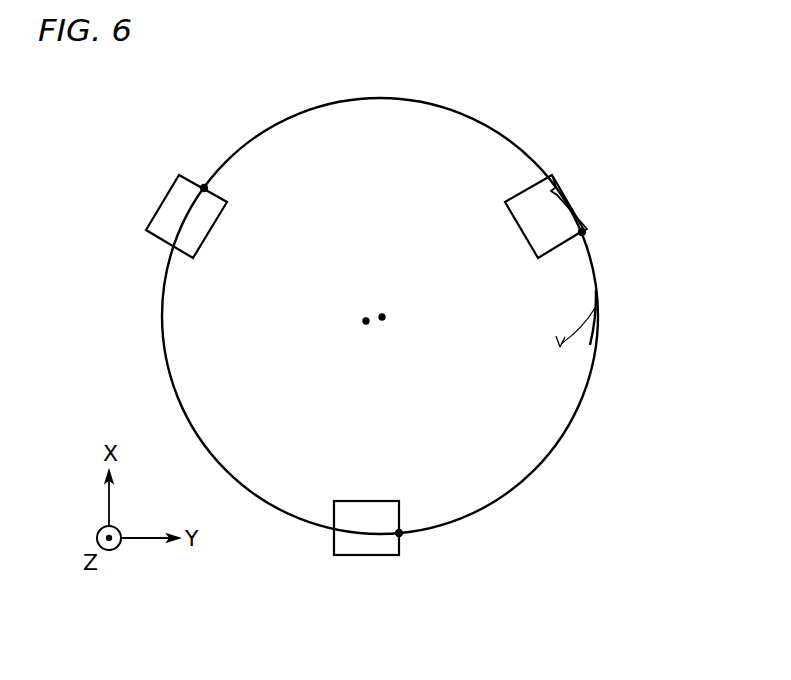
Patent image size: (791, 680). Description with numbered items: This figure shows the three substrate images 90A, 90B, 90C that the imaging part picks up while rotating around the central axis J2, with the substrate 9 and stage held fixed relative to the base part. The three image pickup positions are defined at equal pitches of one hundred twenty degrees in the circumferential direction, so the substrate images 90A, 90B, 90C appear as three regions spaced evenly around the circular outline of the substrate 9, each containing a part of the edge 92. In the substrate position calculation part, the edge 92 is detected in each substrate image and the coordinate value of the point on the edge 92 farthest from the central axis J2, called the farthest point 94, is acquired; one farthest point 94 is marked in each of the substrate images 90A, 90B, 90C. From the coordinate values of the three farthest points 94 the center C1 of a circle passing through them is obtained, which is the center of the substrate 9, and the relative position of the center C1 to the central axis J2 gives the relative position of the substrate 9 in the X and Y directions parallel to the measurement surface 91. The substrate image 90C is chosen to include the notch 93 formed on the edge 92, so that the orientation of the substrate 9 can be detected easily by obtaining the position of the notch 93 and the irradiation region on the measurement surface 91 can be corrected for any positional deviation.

The substrate 9 is at (573, 357).
The measurement surface 91 is at (593, 305).
The edge 92 is at (596, 338).
The notch 93 is at (557, 193).
The farthest point 94 is at (203, 186).
The substrate image 90A is at (160, 203).
The substrate image 90B is at (334, 538).
The substrate image 90C is at (572, 202).
The central axis J2 is at (363, 321).
The center of circle C1 is at (385, 316).